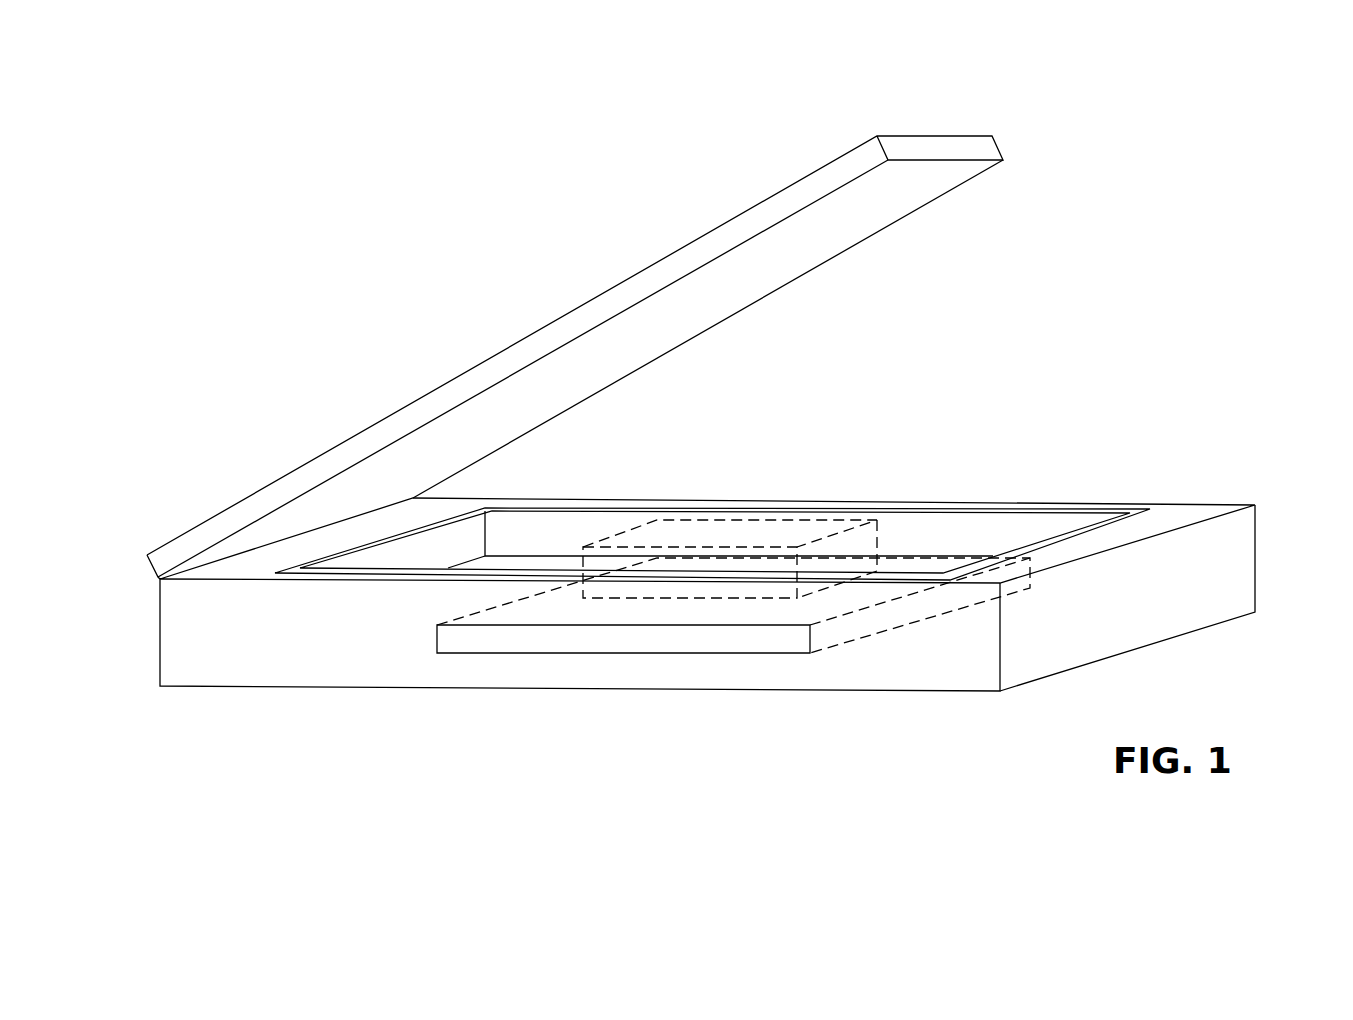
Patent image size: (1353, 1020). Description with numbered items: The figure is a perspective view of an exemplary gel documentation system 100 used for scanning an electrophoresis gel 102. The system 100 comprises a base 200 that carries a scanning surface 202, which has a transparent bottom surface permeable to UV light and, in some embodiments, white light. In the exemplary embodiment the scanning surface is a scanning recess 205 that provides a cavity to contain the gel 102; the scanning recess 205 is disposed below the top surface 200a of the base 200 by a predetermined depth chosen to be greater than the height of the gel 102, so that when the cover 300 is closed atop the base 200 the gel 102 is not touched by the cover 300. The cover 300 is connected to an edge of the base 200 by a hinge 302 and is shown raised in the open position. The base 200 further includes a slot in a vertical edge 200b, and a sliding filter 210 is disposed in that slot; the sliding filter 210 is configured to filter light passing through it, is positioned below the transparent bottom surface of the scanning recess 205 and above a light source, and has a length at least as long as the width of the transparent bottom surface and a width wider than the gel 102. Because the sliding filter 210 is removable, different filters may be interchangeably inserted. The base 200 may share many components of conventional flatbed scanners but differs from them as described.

The gel documentation system 100 is at (355, 195).
The cover 300 is at (705, 255).
The hinge 302 is at (210, 568).
The base 200 is at (1170, 601).
The top surface 200a is at (351, 530).
The vertical edge 200b is at (930, 642).
The scanning recess 205 is at (970, 542).
The electrophoresis gel 102 is at (790, 518).
The scanning surface 202 is at (557, 598).
The sliding filter 210 is at (783, 642).